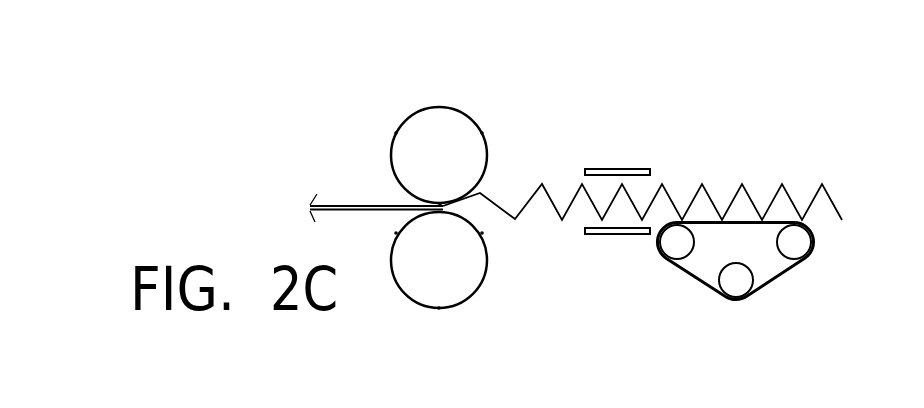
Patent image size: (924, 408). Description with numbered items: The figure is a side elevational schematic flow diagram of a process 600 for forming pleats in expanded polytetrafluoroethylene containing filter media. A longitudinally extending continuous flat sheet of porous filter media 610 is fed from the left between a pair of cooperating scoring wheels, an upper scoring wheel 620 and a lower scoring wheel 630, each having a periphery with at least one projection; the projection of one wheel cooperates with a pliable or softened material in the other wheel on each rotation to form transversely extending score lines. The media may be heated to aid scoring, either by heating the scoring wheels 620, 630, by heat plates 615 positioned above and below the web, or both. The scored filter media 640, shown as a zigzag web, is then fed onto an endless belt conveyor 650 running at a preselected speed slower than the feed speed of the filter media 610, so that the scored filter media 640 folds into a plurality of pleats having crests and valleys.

The process 600 is at (204, 86).
The filter media 610 is at (352, 206).
The heat plates 615 is at (617, 169).
The upper scoring wheel 620 is at (423, 120).
The lower scoring wheel 630 is at (422, 293).
The scored filter media 640 is at (495, 200).
The endless belt conveyor 650 is at (787, 270).